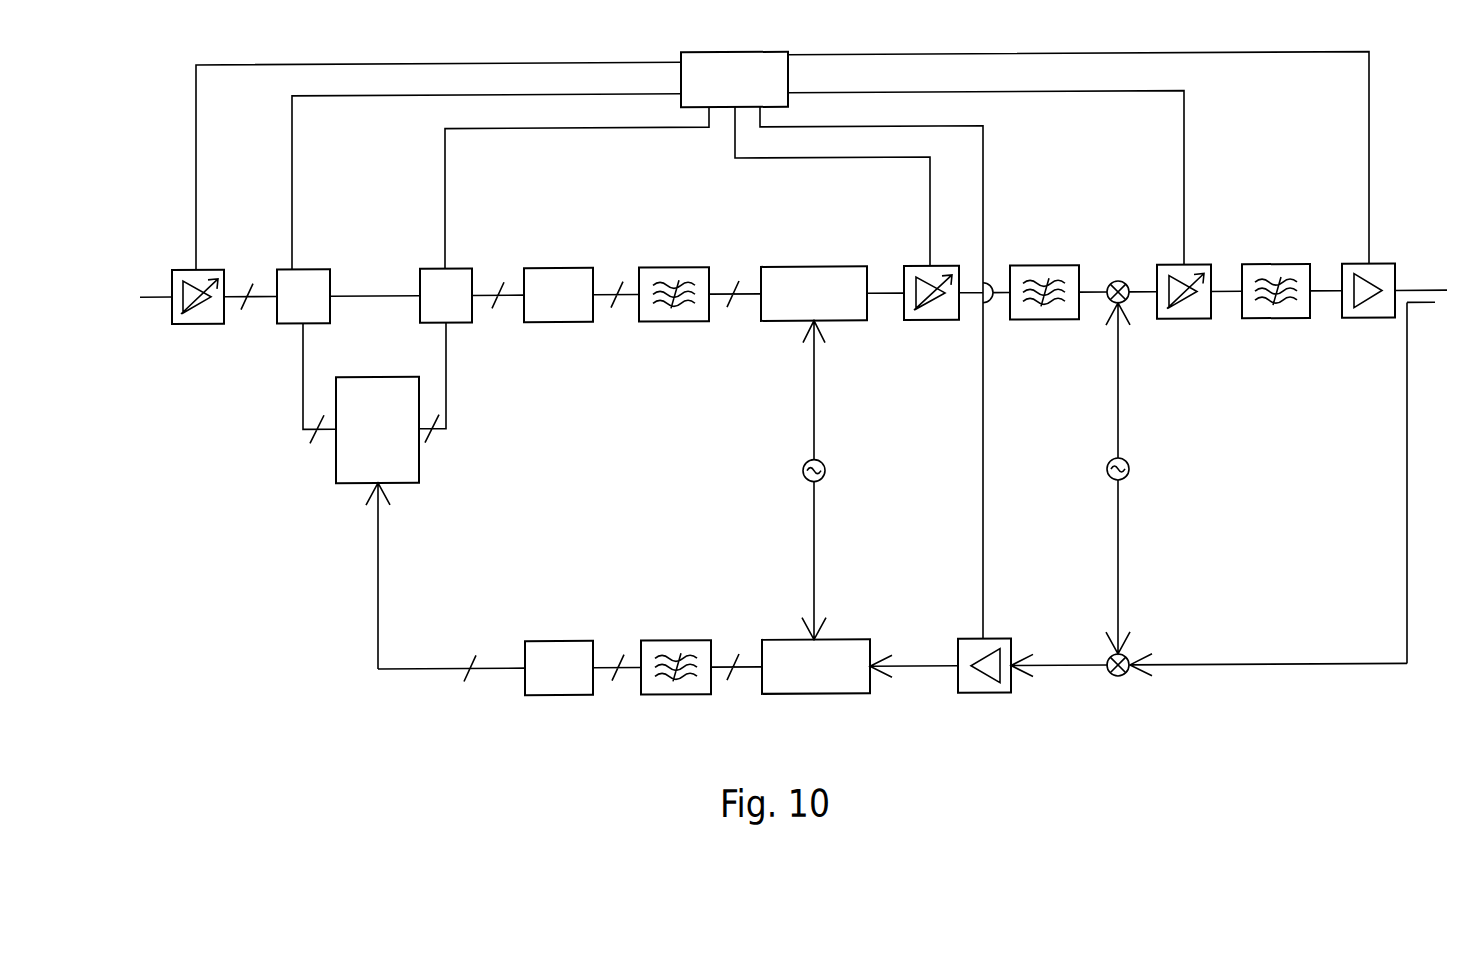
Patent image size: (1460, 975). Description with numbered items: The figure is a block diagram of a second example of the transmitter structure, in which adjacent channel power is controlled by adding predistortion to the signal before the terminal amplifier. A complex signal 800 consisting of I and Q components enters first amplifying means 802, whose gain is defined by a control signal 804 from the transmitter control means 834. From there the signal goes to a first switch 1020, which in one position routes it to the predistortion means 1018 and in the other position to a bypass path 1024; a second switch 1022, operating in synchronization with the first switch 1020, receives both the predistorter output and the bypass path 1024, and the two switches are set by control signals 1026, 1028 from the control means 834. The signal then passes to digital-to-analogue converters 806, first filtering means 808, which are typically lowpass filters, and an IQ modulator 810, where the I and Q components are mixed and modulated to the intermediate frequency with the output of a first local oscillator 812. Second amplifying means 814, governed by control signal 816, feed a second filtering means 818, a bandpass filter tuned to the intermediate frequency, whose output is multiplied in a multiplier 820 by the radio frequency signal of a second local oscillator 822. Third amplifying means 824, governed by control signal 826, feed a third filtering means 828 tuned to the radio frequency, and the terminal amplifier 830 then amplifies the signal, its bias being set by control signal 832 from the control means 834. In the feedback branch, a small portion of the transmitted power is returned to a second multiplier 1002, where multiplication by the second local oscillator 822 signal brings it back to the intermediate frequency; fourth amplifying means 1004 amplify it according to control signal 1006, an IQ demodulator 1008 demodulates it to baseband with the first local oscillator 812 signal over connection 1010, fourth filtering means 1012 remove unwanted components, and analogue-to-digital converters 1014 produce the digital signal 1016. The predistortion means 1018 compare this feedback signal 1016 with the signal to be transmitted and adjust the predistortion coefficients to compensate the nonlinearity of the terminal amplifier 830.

The complex signal 800 is at (152, 299).
The first amplifying means 802 is at (210, 326).
The control signal 804 is at (197, 173).
The digital-to-analogue converters 806 is at (545, 271).
The first filtering means 808 is at (662, 272).
The IQ modulator 810 is at (788, 272).
The first local oscillator 812 is at (805, 474).
The second amplifying means 814 is at (922, 272).
The control signal 816 is at (932, 218).
The second filtering means 818 is at (1018, 271).
The multiplier 820 is at (1121, 287).
The second local oscillator 822 is at (1108, 471).
The third amplifying means 824 is at (1197, 271).
The control signal 826 is at (1185, 189).
The third filtering means 828 is at (1290, 325).
The terminal amplifier 830 is at (1382, 271).
The control signal 832 is at (1370, 190).
The transmitter control means 834 is at (718, 56).
The second multiplier 1002 is at (1120, 685).
The fourth amplifying means 1004 is at (990, 700).
The control signal 1006 is at (983, 560).
The IQ demodulator 1008 is at (812, 702).
The local oscillator signal line 1010 is at (815, 591).
The fourth filtering means 1012 is at (688, 702).
The analogue-to-digital converters 1014 is at (578, 701).
The digital signal 1016 is at (379, 596).
The predistortion means 1018 is at (405, 485).
The first switch 1020 is at (293, 327).
The second switch 1022 is at (453, 272).
The bypass path 1024 is at (345, 297).
The control signal 1026 is at (292, 197).
The control signal 1028 is at (446, 210).